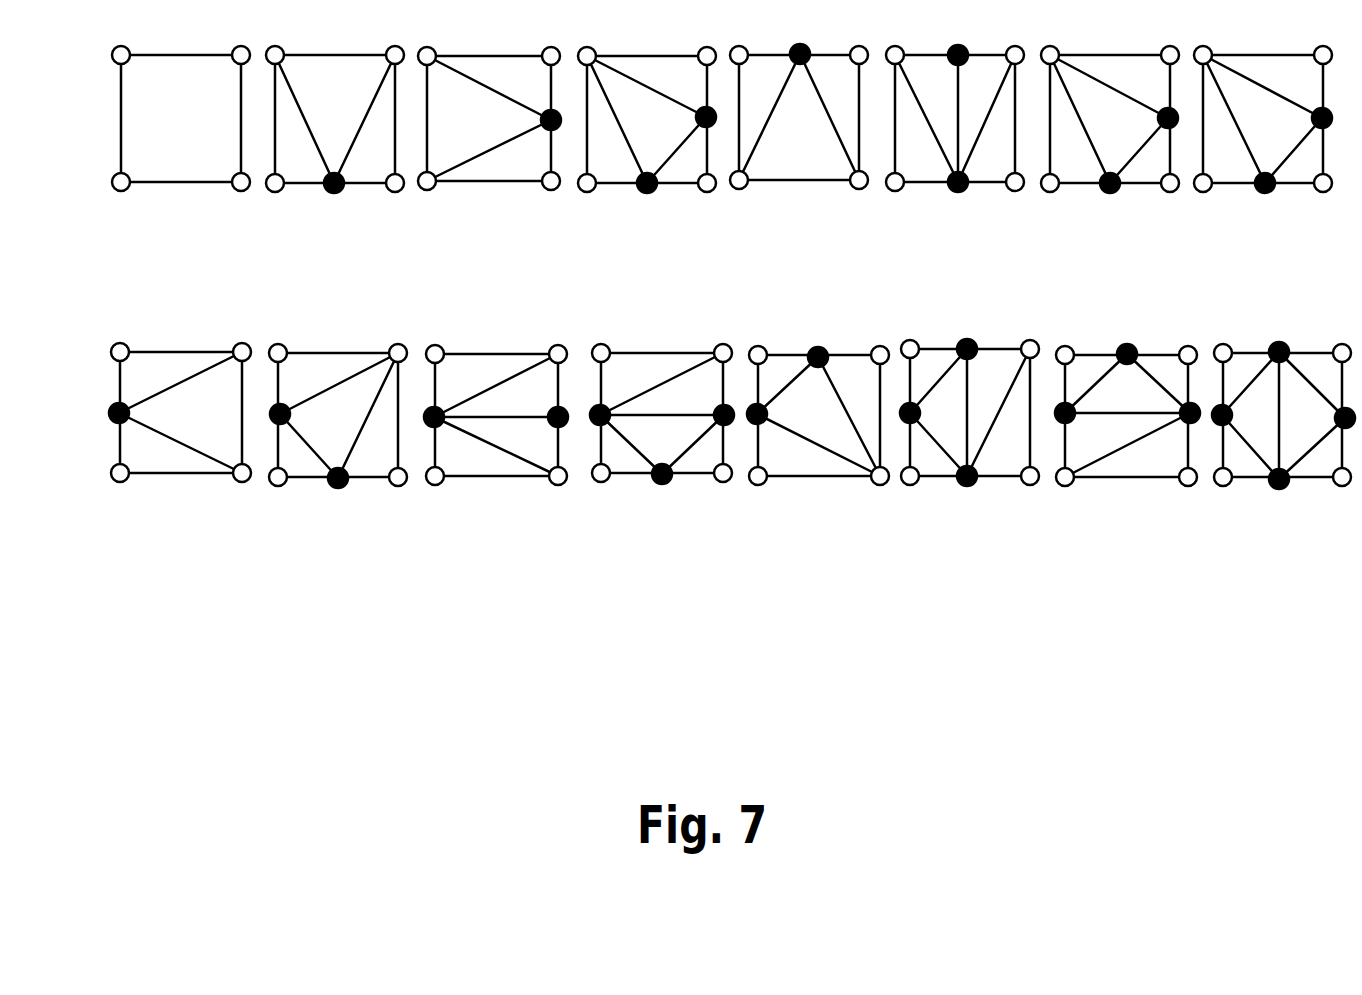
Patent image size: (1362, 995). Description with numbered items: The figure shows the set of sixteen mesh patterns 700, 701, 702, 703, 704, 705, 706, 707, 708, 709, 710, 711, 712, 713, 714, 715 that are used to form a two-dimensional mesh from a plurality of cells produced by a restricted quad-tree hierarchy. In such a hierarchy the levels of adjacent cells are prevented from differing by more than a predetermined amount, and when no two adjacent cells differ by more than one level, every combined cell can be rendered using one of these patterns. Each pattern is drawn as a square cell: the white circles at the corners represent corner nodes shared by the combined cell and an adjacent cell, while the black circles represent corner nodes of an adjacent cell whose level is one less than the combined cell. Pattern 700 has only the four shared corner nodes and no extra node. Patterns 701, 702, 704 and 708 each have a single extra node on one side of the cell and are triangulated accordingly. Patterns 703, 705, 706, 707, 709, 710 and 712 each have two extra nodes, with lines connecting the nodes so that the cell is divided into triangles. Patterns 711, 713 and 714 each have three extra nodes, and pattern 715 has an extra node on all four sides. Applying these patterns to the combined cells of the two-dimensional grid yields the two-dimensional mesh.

The mesh pattern 700 is at (181, 153).
The mesh pattern 701 is at (335, 153).
The mesh pattern 702 is at (489, 154).
The mesh pattern 703 is at (647, 154).
The mesh pattern 704 is at (799, 152).
The mesh pattern 705 is at (955, 153).
The mesh pattern 706 is at (1110, 153).
The mesh pattern 707 is at (1263, 153).
The mesh pattern 708 is at (180, 451).
The mesh pattern 709 is at (338, 451).
The mesh pattern 710 is at (496, 452).
The mesh pattern 711 is at (662, 451).
The mesh pattern 712 is at (818, 452).
The mesh pattern 713 is at (969, 449).
The mesh pattern 714 is at (1127, 451).
The mesh pattern 715 is at (1283, 450).